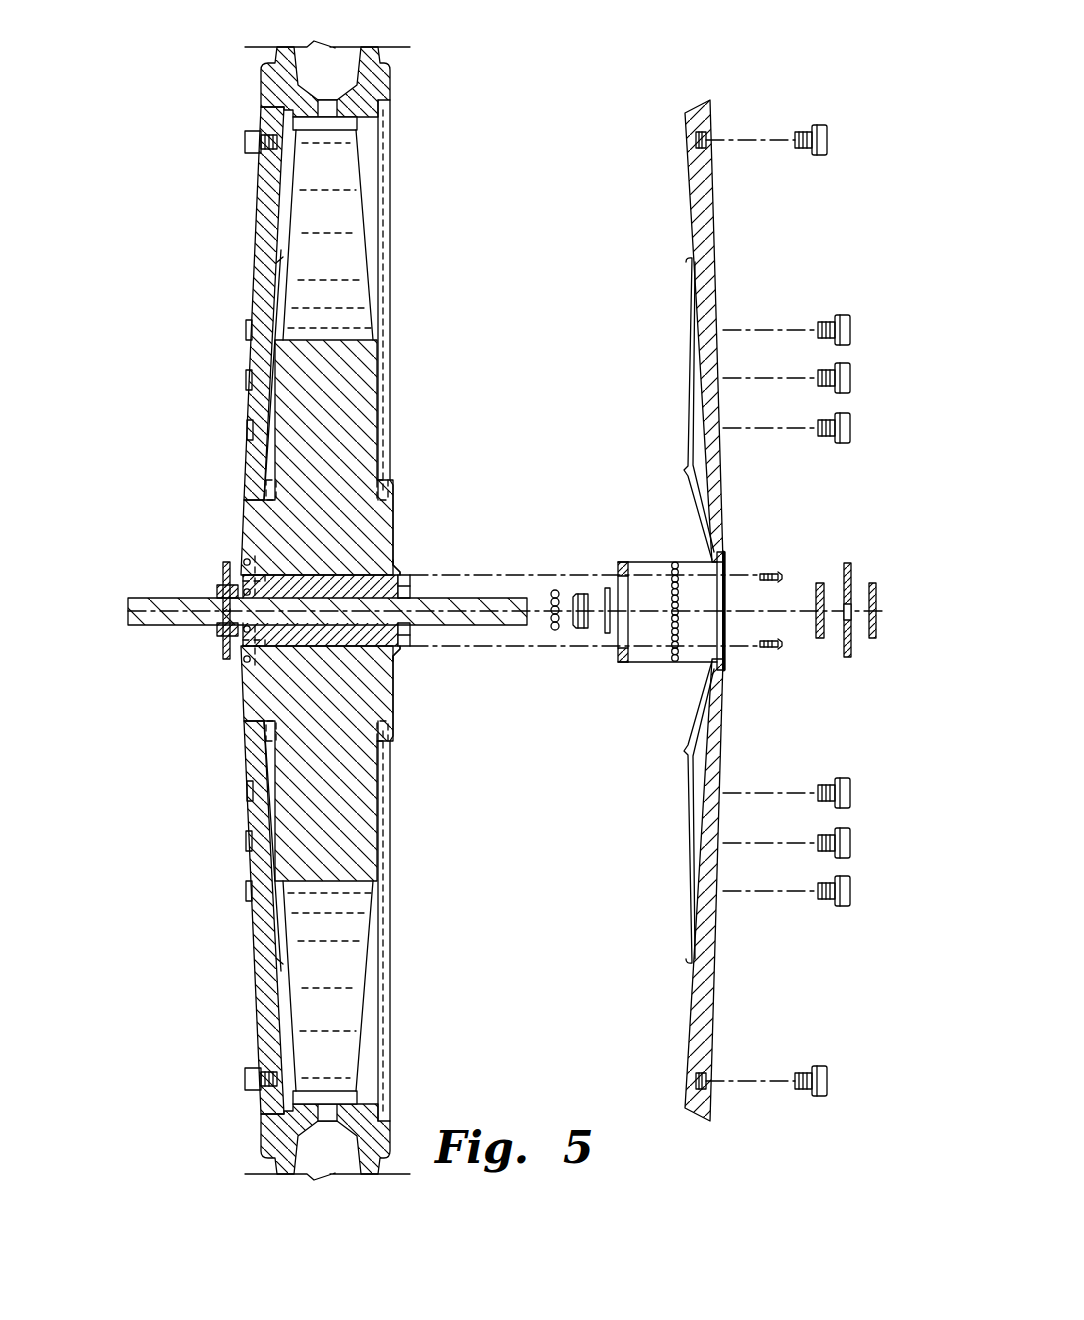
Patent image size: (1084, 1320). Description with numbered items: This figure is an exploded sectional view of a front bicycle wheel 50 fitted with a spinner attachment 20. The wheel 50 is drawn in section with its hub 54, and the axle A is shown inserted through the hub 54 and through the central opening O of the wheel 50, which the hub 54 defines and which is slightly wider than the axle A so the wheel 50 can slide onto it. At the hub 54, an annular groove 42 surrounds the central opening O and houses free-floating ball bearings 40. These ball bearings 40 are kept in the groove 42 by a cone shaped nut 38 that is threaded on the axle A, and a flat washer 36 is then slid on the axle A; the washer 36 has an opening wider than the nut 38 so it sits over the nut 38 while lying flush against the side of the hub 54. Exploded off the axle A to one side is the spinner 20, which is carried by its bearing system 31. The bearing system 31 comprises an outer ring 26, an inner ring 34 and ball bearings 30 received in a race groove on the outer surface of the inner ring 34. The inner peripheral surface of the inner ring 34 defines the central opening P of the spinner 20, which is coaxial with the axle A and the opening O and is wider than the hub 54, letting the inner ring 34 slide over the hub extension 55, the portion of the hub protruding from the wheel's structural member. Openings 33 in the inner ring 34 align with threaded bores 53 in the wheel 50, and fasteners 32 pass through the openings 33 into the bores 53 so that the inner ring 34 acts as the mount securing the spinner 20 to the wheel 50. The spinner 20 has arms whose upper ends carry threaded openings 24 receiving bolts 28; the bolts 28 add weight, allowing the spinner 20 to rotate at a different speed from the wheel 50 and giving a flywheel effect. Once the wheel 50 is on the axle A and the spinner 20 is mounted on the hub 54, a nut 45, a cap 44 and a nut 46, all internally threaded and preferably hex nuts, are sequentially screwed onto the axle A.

The front bicycle wheel 50 is at (410, 115).
The spinner attachment 20 is at (742, 108).
The bolts 28 is at (829, 135).
The threaded openings 24 is at (708, 143).
The axle A is at (162, 611).
The hub extension 55 is at (406, 574).
The annular groove 42 is at (423, 593).
The central opening of the wheel O is at (440, 598).
The cone shaped nut 38 is at (578, 592).
The flat washer 36 is at (606, 587).
The openings 33 is at (618, 558).
The inner ring 34 is at (624, 560).
The ball bearings 30 is at (675, 562).
The bearing system 31 is at (717, 680).
The outer ring 26 is at (728, 560).
The fasteners 32 is at (780, 573).
The nut 45 is at (824, 583).
The nut 46 is at (876, 583).
The hub 54 is at (412, 645).
The threaded bores 53 is at (401, 662).
The ball bearings 40 is at (557, 634).
The central opening of the spinner P is at (727, 627).
The cap 44 is at (850, 660).